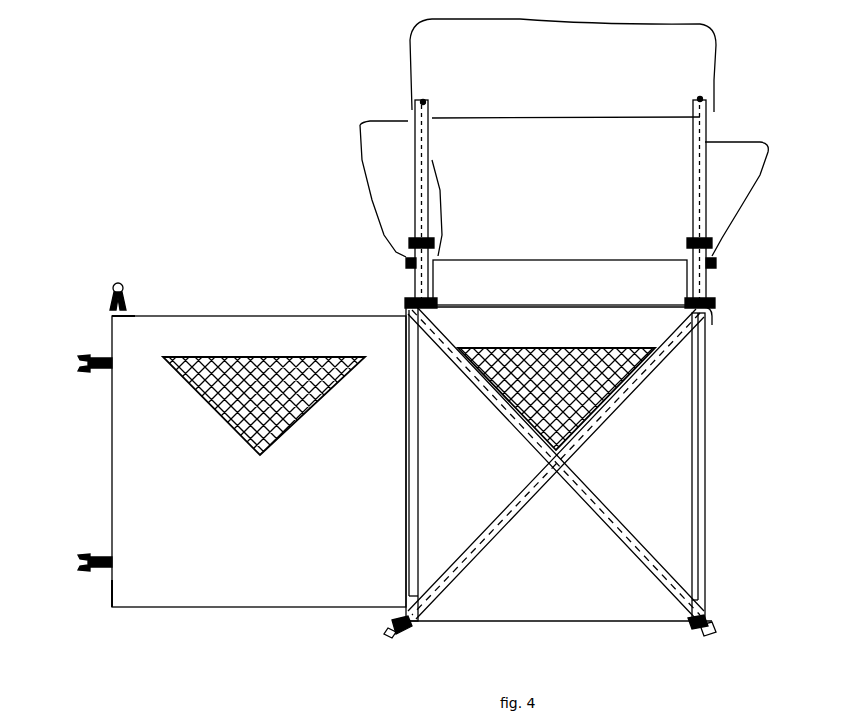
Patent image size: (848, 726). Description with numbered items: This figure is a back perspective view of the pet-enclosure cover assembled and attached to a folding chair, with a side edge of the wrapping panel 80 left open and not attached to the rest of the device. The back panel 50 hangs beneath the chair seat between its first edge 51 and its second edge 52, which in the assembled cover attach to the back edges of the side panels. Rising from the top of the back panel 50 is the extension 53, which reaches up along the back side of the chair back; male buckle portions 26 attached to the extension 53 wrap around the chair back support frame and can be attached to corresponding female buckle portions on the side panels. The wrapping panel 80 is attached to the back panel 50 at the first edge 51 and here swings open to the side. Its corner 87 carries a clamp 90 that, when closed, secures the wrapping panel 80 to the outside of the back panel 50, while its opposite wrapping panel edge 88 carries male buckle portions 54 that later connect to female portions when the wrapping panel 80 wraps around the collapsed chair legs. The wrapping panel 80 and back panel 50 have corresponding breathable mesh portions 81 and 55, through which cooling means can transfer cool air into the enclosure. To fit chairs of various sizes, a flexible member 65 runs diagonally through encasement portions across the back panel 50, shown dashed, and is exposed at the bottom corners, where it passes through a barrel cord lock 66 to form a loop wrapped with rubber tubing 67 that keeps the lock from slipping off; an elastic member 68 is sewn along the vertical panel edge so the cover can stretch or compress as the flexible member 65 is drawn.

The male buckle portion 26 is at (408, 262).
The back panel 50 is at (550, 472).
The back panel first edge 51 is at (408, 366).
The back panel second edge 52 is at (706, 368).
The extension 53 is at (567, 294).
The male buckle portion 54 is at (68, 560).
The mesh portion 55 is at (703, 333).
The flexible member 65 is at (660, 577).
The barrel cord lock 66 is at (696, 624).
The rubber tubing 67 is at (714, 636).
The elastic member 68 is at (693, 533).
The wrapping panel 80 is at (271, 541).
The mesh portion 81 is at (265, 378).
The corner 87 is at (112, 316).
The wrapping panel edge 88 is at (110, 593).
The clamp 90 is at (112, 277).